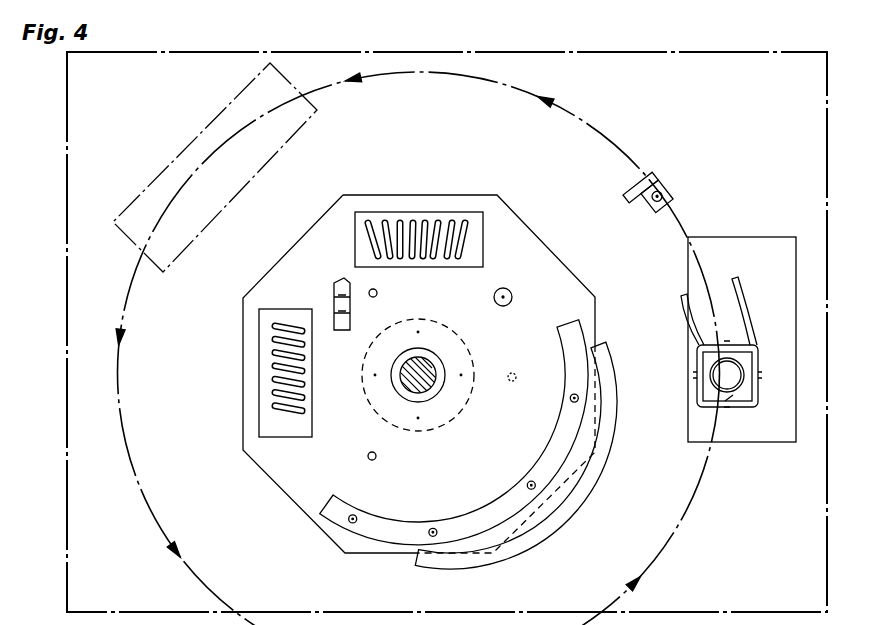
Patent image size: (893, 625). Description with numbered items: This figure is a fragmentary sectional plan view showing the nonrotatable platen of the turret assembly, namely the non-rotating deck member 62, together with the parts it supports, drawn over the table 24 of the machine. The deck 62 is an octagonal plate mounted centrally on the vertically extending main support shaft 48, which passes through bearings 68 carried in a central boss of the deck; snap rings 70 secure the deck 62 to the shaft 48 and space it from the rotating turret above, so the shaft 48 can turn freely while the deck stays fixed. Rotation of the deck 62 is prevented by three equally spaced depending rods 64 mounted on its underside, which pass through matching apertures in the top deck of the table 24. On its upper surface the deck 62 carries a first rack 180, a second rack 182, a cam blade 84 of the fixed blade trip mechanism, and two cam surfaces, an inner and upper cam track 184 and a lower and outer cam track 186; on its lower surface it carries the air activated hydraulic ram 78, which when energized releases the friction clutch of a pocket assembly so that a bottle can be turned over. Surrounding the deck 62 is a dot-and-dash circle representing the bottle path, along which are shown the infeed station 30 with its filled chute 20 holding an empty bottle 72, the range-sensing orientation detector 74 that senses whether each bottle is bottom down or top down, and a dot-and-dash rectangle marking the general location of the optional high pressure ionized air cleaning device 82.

The table 24 is at (67, 165).
The high pressure ionized air cleaning device 82 is at (203, 138).
The range-sensing orientation detector 74 is at (672, 192).
The infeed station 30 is at (757, 303).
The chute 20 is at (727, 375).
The bottle 72 is at (733, 405).
The non-rotating deck member 62 is at (272, 477).
The first rack 180 is at (431, 214).
The second rack 182 is at (259, 366).
The cam blade 84 is at (334, 288).
The depending rods 64 is at (377, 293).
The air activated hydraulic ram 78 is at (503, 306).
The snap rings 70 is at (396, 368).
The bearings 68 is at (402, 392).
The main support shaft 48 is at (432, 393).
The inner and upper cam track 184 is at (548, 450).
The lower and outer cam track 186 is at (598, 500).